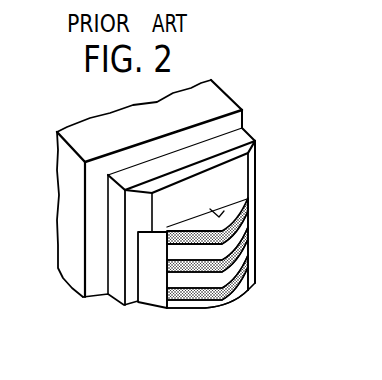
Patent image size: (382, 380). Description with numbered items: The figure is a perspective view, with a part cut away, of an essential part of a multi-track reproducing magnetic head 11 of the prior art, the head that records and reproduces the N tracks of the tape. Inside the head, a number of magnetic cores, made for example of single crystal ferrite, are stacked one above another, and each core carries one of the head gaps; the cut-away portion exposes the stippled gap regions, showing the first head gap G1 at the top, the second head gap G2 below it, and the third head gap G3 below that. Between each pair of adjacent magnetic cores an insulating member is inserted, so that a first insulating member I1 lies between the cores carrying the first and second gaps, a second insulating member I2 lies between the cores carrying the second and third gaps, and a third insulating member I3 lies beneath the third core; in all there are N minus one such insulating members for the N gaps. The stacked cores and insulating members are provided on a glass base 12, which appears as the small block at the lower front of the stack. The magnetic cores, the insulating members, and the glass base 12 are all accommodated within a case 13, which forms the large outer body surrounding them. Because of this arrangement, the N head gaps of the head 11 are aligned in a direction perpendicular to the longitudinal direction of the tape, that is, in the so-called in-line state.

The magnetic head 11 is at (254, 118).
The glass base 12 is at (153, 299).
The case 13 is at (93, 273).
The head gap G1 is at (236, 229).
The insulating member I1 is at (228, 247).
The head gap G2 is at (222, 270).
The insulating member I2 is at (191, 281).
The head gap G3 is at (224, 296).
The insulating member I3 is at (208, 305).